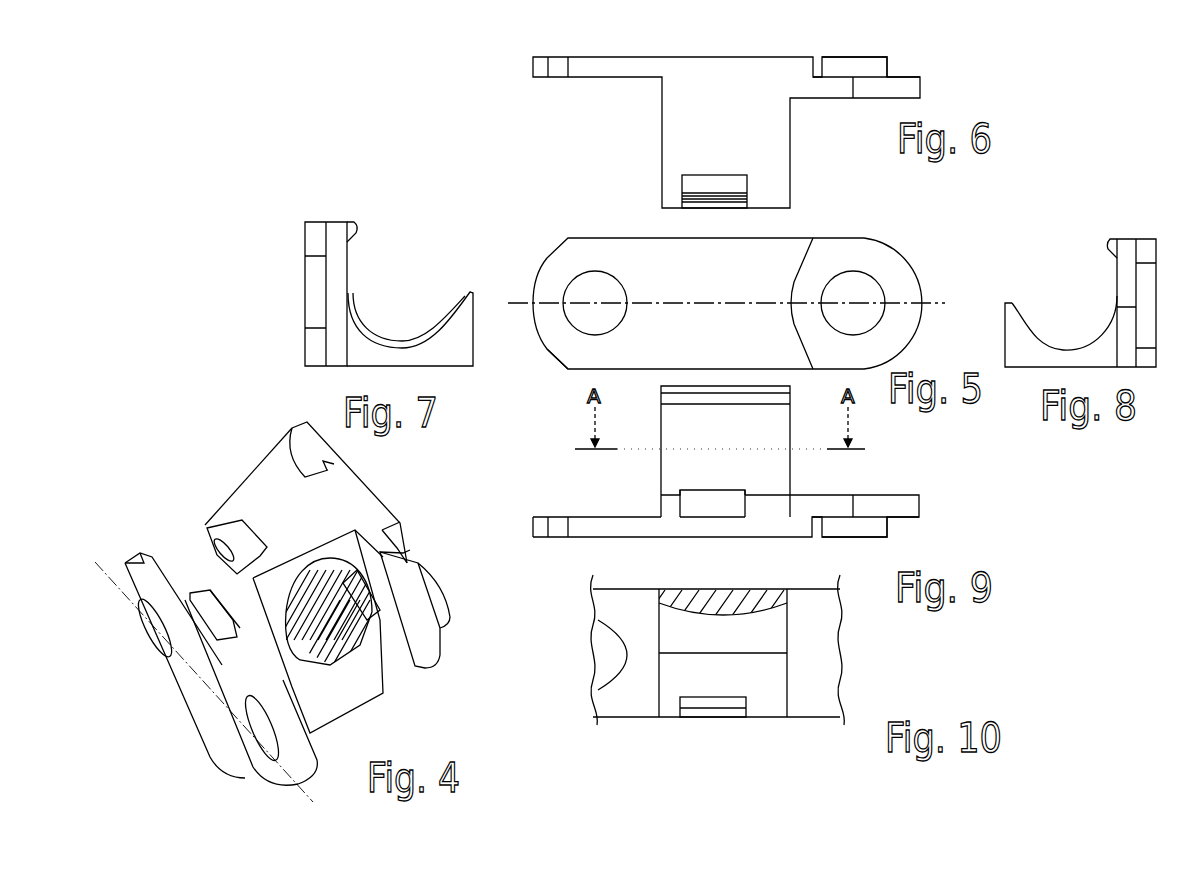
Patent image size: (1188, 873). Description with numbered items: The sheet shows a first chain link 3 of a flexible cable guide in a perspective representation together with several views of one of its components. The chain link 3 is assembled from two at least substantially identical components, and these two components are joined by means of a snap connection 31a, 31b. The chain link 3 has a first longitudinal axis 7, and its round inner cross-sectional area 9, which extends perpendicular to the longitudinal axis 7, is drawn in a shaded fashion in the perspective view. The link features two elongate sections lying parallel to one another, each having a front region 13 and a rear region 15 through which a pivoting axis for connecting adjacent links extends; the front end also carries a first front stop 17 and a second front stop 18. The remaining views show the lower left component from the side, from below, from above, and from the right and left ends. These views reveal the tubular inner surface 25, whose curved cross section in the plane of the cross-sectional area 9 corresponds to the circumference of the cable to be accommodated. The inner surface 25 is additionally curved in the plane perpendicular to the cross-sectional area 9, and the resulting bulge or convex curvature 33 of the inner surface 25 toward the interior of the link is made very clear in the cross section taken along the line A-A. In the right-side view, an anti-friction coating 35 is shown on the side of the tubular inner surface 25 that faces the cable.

In FIG. 4, the first chain link 3 is at (161, 457).
In FIG. 5, the first longitudinal axis 7 is at (928, 303).
In FIG. 4, the first longitudinal axis 7 is at (95, 562).
In FIG. 4, the cross-sectional area 9 is at (351, 612).
In FIG. 6, the front region 13 is at (578, 49).
In FIG. 5, the front region 13 is at (596, 259).
In FIG. 9, the front region 13 is at (566, 503).
In FIG. 4, the front region 13 is at (146, 542).
In FIG. 6, the rear region 15 is at (905, 68).
In FIG. 5, the rear region 15 is at (879, 268).
In FIG. 9, the rear region 15 is at (897, 526).
In FIG. 4, the rear region 15 is at (268, 775).
In FIG. 6, the first front stop 17 is at (566, 78).
In FIG. 5, the first front stop 17 is at (568, 238).
In FIG. 4, the first front stop 17 is at (128, 563).
In FIG. 5, the second front stop 18 is at (568, 370).
In FIG. 9, the second front stop 18 is at (548, 537).
In FIG. 9, the tubular inner surface 25 is at (768, 460).
In FIG. 10, the tubular inner surface 25 is at (687, 630).
In FIG. 7, the tubular inner surface 25 is at (432, 342).
In FIG. 8, the tubular inner surface 25 is at (1045, 340).
In FIG. 4, the tubular inner surface 25 is at (283, 507).
In FIG. 4, the snap connection 31a is at (226, 533).
In FIG. 4, the snap connection 31b is at (206, 610).
In FIG. 10, the convex curvature of the inner surface 33 is at (756, 621).
In FIG. 7, the anti-friction coating 35 is at (392, 340).